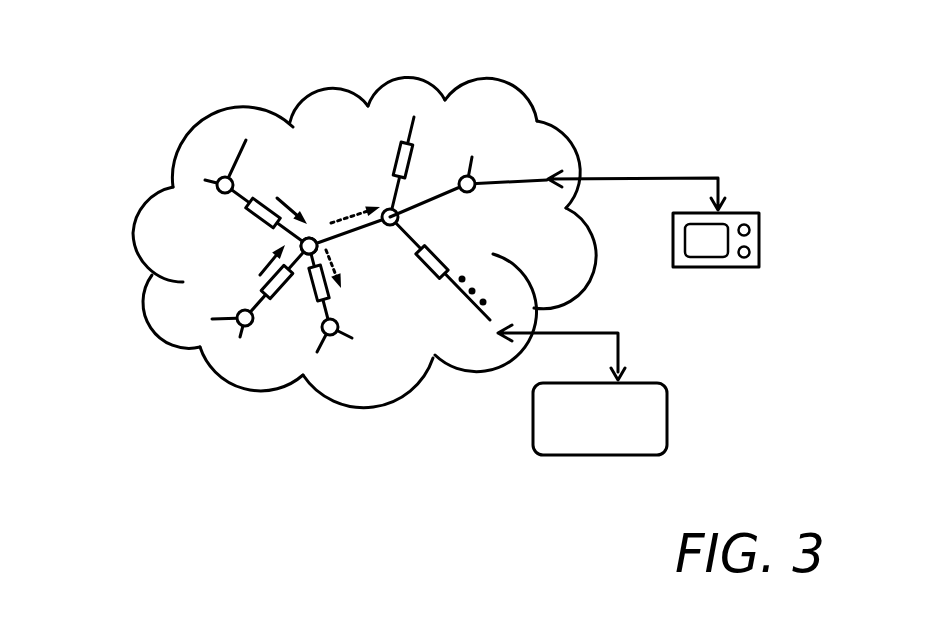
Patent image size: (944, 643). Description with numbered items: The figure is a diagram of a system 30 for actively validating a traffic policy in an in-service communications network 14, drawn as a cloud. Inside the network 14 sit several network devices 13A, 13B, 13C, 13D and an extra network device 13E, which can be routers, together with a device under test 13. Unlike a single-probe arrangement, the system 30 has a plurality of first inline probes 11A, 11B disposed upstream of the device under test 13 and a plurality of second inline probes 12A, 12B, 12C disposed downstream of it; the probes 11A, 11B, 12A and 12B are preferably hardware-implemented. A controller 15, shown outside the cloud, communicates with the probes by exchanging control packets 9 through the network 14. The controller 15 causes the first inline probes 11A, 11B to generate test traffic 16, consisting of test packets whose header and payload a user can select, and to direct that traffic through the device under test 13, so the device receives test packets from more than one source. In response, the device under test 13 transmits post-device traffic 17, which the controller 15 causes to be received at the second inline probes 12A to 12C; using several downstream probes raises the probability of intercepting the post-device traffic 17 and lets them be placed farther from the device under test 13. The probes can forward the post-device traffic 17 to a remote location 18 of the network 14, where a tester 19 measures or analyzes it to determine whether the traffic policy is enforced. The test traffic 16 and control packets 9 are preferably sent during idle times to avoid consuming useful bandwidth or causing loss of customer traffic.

The system 30 is at (170, 242).
The network 14 is at (213, 373).
The first inline probe 11A is at (263, 200).
The first inline probe 11B is at (272, 298).
The second inline probe 12A is at (333, 293).
The second inline probe 12B is at (408, 156).
The second inline probe 12C is at (438, 256).
The control packets 9 is at (493, 255).
The device under test 13 is at (314, 231).
The test traffic 16 is at (320, 231).
The network device 13A is at (250, 345).
The network device 13B is at (336, 342).
The network device 13C is at (472, 182).
The network device 13D is at (218, 180).
The network device 13E is at (394, 212).
The post-device traffic 17 is at (375, 220).
The remote location 18 is at (582, 178).
The tester 19 is at (752, 241).
The controller 15 is at (612, 432).